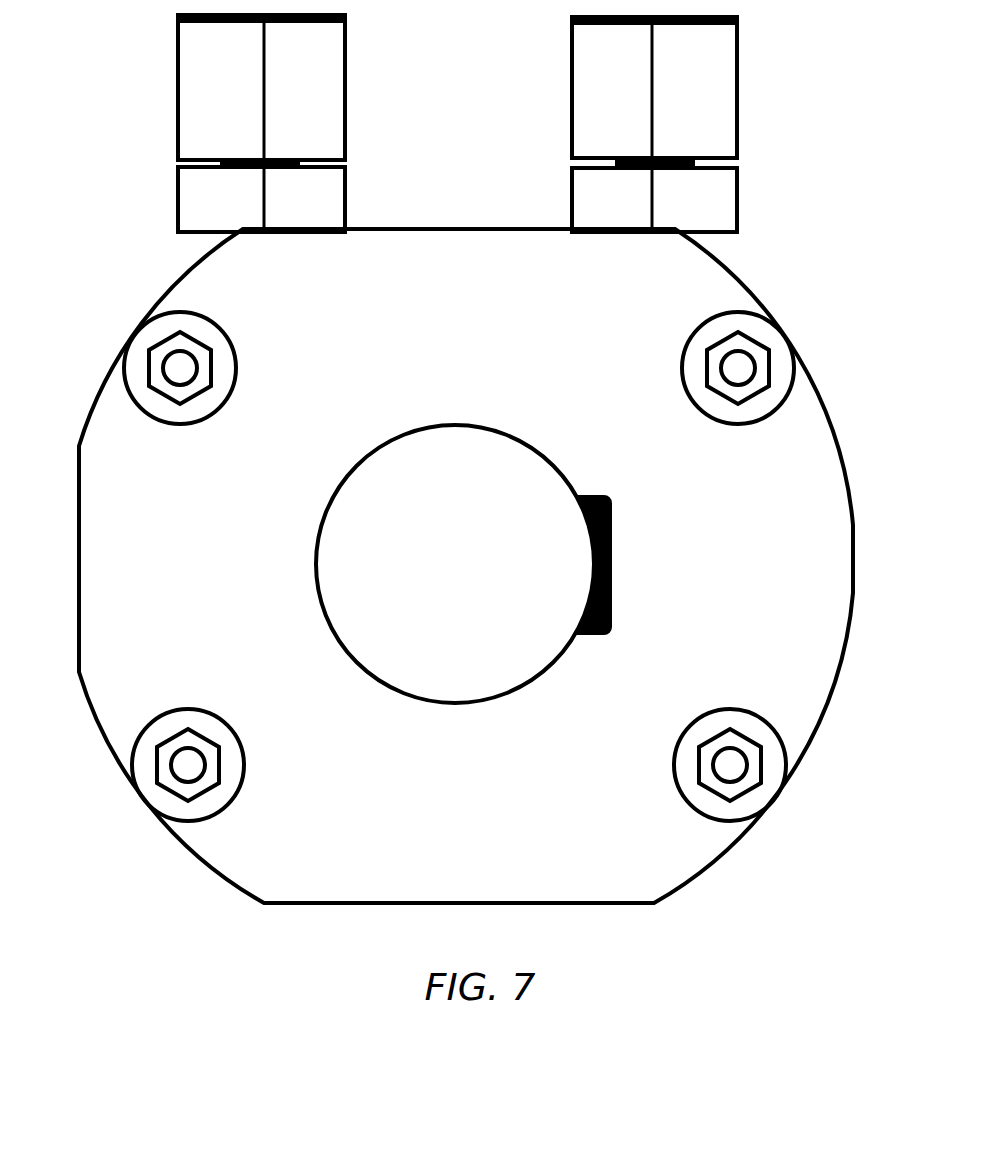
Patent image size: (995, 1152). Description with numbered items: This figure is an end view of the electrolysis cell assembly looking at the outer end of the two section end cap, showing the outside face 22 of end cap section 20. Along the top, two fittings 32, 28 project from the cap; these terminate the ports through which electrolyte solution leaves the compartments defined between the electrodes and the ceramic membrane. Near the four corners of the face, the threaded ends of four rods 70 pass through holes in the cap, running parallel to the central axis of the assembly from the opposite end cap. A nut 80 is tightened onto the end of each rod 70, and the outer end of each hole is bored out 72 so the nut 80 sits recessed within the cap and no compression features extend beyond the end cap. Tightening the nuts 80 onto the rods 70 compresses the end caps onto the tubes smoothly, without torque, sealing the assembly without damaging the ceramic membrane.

The section of two section end cap 20 is at (481, 155).
The outside face of section 20 22 is at (813, 478).
The fitting 28 is at (708, 117).
The fitting 32 is at (212, 110).
The rod 70 is at (178, 367).
The bored out portion 72 is at (162, 408).
The nut 80 is at (150, 355).